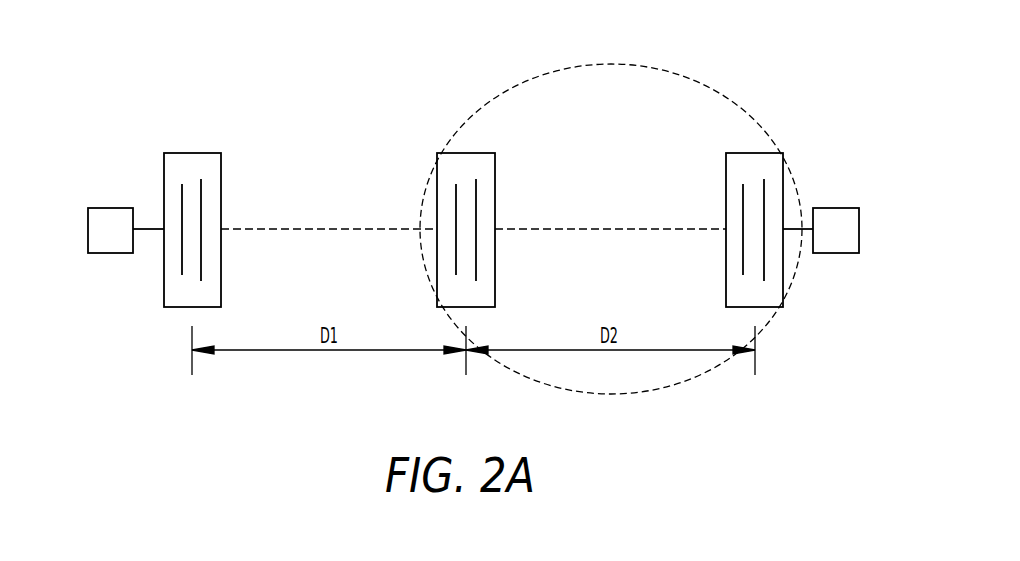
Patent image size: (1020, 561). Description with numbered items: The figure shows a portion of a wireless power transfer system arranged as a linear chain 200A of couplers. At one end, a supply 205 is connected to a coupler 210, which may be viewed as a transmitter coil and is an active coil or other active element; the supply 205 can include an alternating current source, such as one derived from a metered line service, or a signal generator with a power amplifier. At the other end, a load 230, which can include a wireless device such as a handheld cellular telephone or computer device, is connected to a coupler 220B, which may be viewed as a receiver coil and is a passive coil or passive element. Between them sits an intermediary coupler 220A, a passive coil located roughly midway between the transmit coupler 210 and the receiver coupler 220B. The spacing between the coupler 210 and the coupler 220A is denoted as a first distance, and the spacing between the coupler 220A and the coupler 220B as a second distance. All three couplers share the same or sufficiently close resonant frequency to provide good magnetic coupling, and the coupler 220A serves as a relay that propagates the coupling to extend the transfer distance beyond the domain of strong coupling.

The linear chain 200A is at (282, 43).
The supply 205 is at (110, 208).
The coupler 210 is at (192, 152).
The coupler 220A is at (465, 152).
The coupler 220B is at (755, 152).
The load 230 is at (837, 208).